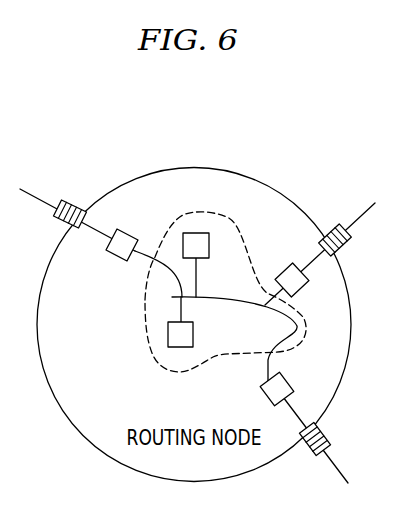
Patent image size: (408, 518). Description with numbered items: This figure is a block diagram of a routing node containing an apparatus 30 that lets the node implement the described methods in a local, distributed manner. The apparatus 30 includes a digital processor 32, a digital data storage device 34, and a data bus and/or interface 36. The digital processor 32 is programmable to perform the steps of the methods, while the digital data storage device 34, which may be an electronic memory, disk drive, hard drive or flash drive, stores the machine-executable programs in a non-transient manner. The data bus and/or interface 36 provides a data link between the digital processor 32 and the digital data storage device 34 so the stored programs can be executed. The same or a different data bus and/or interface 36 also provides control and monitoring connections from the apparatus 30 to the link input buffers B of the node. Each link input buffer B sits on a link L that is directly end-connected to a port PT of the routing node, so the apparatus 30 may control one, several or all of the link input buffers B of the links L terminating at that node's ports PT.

The link L is at (38, 193).
The port PT is at (51, 227).
The link input buffer B is at (110, 253).
The apparatus 30 is at (145, 297).
The digital processor 32 is at (183, 233).
The digital data storage device 34 is at (165, 346).
The data bus and/or interface 36 is at (247, 305).